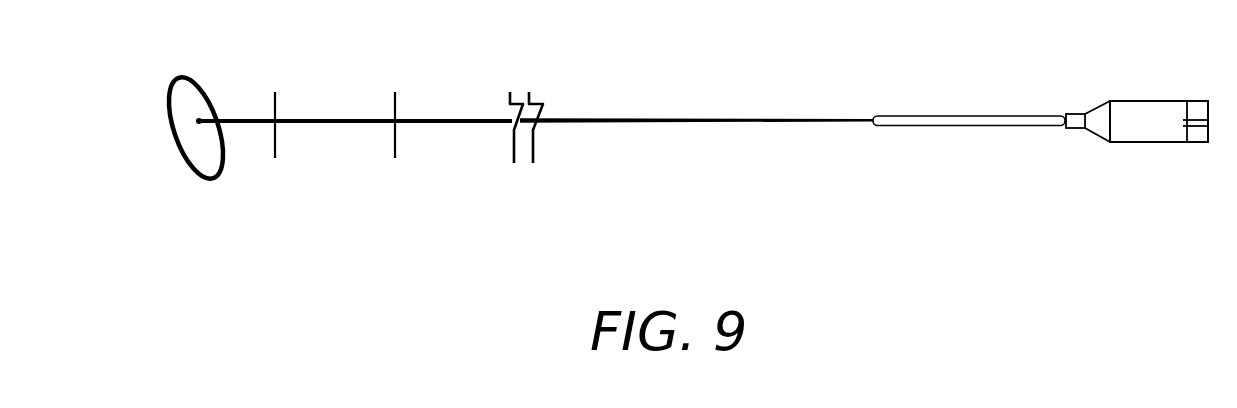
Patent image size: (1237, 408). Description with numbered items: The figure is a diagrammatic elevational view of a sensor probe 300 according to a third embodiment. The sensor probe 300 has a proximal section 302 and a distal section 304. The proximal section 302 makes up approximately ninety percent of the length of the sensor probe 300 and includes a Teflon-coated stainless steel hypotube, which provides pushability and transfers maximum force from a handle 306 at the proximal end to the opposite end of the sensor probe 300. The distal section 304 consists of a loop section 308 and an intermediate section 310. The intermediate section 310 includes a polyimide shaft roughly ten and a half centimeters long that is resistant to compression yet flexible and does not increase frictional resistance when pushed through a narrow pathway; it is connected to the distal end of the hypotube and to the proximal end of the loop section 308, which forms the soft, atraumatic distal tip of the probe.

The sensor probe 300 is at (757, 180).
The proximal section 302 is at (883, 168).
The distal section 304 is at (318, 196).
The handle 306 is at (1143, 130).
The loop section 308 is at (164, 88).
The intermediate section 310 is at (310, 118).